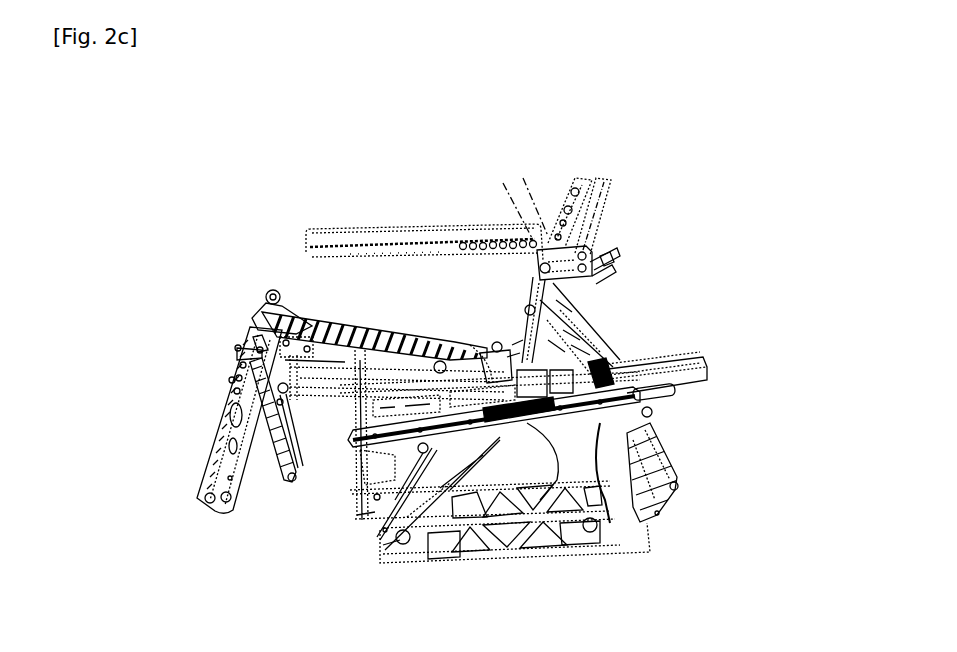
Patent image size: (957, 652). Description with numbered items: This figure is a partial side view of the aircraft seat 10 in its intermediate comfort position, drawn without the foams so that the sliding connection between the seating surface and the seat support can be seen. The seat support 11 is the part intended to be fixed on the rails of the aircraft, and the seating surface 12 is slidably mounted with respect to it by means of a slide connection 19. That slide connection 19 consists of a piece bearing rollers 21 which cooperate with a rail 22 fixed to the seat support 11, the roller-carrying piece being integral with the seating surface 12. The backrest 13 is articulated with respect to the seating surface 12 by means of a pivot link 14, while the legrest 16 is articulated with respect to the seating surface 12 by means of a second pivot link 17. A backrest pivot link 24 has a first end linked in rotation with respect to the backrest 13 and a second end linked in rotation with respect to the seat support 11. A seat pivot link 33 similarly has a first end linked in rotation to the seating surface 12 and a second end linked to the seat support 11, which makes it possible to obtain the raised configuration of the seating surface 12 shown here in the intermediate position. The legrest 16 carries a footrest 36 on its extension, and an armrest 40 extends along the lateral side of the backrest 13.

The seat 10 is at (645, 137).
The seat support 11 is at (390, 460).
The seating surface 12 is at (317, 310).
The backrest 13 is at (550, 197).
The pivot link 14 is at (487, 337).
The legrest 16 is at (232, 382).
The pivot link 17 is at (248, 310).
The slide connection 19 is at (388, 545).
The rollers 21 is at (593, 548).
The rail 22 is at (660, 410).
The backrest pivot link 24 is at (660, 450).
The seat pivot link 33 is at (375, 322).
The footrest 36 is at (205, 465).
The armrest 40 is at (453, 337).